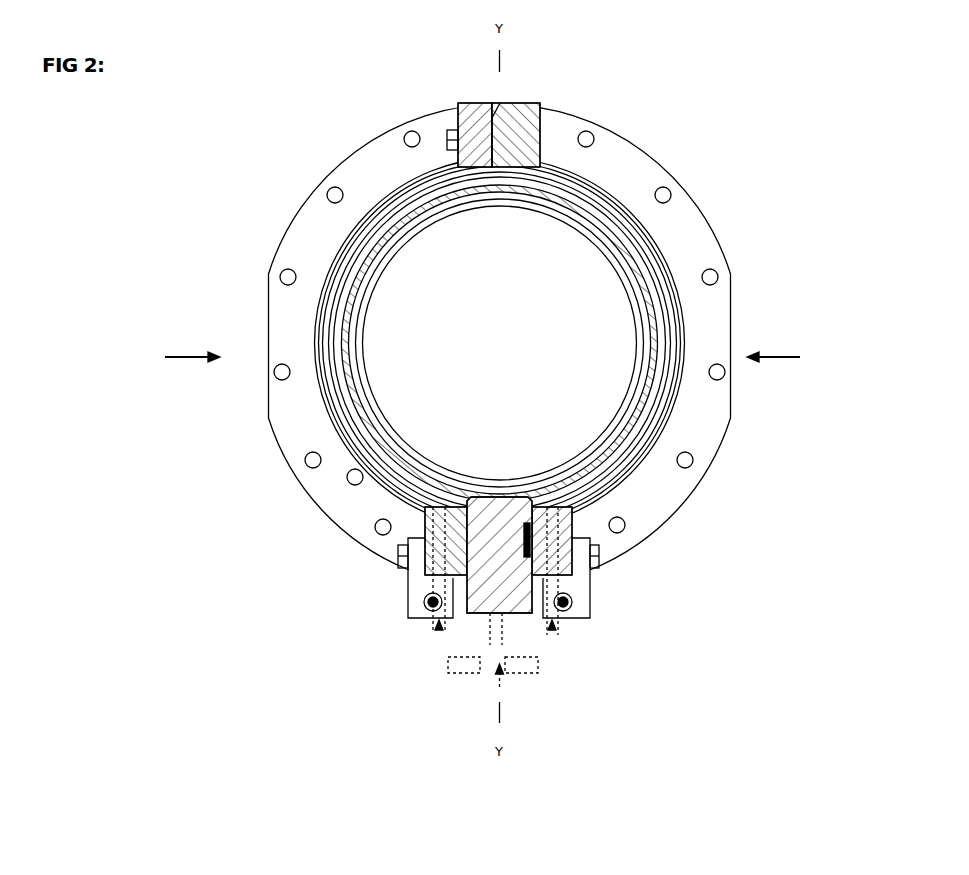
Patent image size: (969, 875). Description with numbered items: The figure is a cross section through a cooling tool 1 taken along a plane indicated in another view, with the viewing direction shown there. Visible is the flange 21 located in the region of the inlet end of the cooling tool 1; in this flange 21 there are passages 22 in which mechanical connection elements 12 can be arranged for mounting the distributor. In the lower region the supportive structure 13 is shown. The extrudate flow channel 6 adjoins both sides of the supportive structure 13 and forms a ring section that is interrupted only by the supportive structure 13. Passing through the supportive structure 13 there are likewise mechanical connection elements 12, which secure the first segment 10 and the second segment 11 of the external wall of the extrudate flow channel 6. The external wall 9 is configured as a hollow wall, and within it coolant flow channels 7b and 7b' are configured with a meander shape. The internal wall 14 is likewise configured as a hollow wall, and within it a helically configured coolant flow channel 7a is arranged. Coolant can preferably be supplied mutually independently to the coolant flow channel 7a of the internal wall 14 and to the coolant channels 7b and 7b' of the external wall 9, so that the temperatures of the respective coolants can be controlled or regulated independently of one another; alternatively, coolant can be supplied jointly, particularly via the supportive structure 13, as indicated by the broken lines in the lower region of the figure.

The cooling tool 1 is at (698, 113).
The extrudate flow channel 6 is at (580, 455).
The coolant flow channel 7a is at (360, 335).
The coolant flow channel 7b is at (421, 343).
The coolant flow channel 7b' is at (558, 343).
The external wall 9 is at (663, 420).
The first segment 10 is at (800, 356).
The second segment 11 is at (175, 356).
The mechanical connection elements 12 is at (378, 553).
The supportive structure 13 is at (468, 505).
The internal wall 14 is at (610, 255).
The flange 21 is at (698, 225).
The passages 22 is at (716, 277).